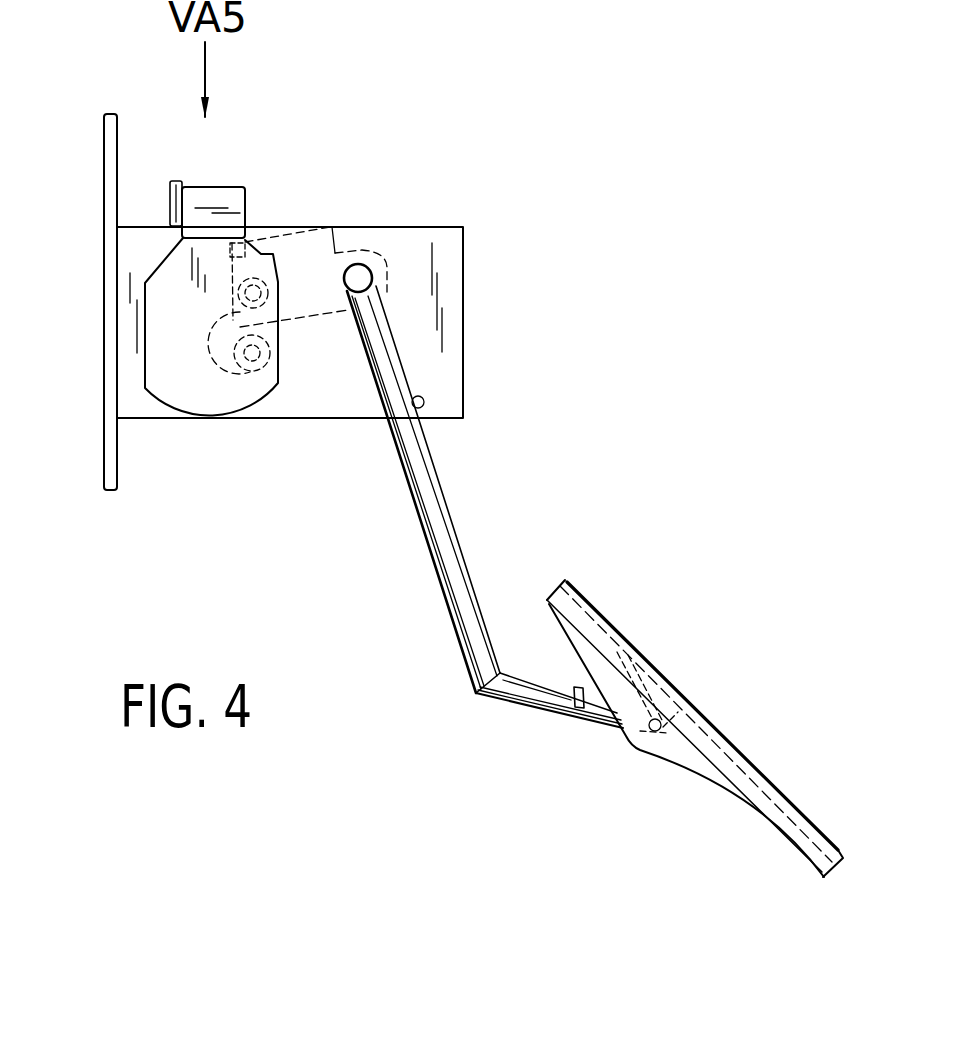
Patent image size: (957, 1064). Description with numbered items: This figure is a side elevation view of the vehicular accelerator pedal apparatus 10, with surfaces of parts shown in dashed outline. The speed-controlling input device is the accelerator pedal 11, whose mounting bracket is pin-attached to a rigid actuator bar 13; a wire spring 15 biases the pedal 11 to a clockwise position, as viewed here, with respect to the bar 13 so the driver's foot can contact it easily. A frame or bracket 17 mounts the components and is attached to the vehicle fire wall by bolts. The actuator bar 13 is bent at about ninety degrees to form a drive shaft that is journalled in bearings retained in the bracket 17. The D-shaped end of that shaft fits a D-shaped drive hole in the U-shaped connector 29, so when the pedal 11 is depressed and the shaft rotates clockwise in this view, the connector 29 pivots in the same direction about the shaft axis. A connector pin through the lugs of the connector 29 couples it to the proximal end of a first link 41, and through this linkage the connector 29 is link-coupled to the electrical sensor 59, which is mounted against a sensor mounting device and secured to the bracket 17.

The vehicular accelerator pedal apparatus 10 is at (338, 158).
The accelerator pedal 11 is at (698, 717).
The actuator bar 13 is at (440, 509).
The wire spring 15 is at (578, 688).
The bracket 17 is at (463, 250).
The U-shaped connector 29 is at (322, 317).
The first link 41 is at (233, 332).
The electrical sensor 59 is at (160, 402).